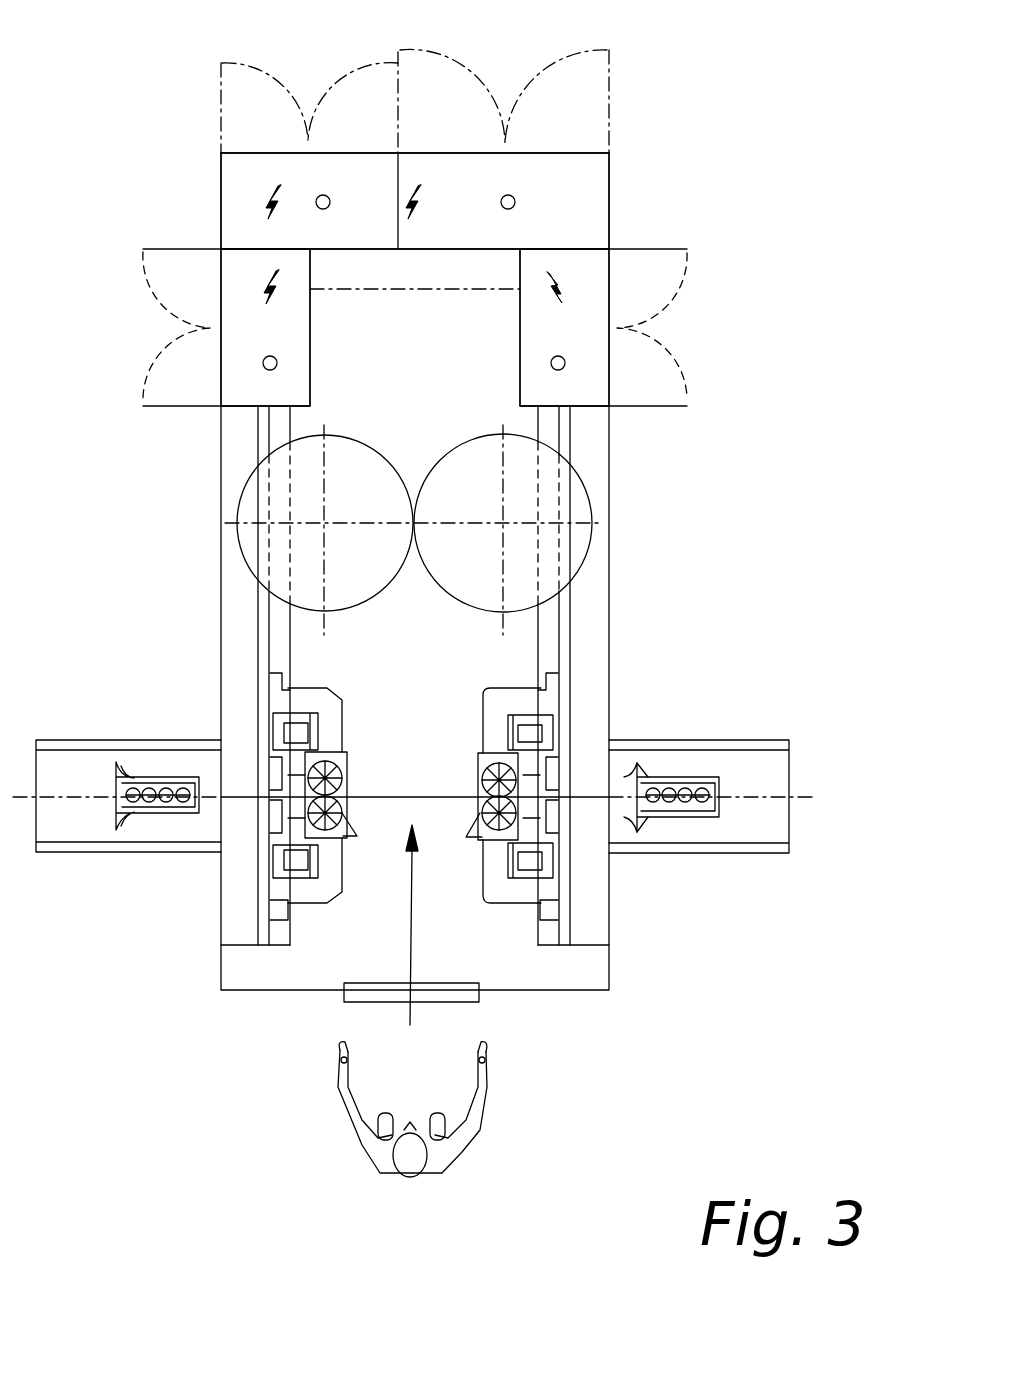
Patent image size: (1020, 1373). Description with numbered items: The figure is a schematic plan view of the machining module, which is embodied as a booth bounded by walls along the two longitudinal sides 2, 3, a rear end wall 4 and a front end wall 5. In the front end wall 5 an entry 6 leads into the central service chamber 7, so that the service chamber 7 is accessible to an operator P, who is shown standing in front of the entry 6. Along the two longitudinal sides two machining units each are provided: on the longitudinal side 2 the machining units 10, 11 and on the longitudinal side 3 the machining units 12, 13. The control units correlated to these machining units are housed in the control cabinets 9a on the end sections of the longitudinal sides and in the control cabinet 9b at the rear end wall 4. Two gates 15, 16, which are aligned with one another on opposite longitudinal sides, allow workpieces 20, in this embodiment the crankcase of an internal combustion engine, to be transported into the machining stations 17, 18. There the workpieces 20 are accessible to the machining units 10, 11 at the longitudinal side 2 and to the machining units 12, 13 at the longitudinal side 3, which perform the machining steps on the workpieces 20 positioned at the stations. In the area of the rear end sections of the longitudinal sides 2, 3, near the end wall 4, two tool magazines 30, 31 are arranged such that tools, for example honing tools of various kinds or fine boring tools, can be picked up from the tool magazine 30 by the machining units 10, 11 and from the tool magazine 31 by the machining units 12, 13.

The longitudinal side 2 is at (218, 467).
The longitudinal side 3 is at (610, 460).
The rear end wall 4 is at (475, 257).
The front end wall 5 is at (553, 992).
The entry 6 is at (370, 997).
The central service chamber 7 is at (413, 943).
The control cabinet 9a is at (235, 291).
The control cabinet 9b is at (592, 200).
The machining unit 10 is at (340, 842).
The machining unit 11 is at (347, 778).
The machining unit 12 is at (482, 778).
The machining unit 13 is at (492, 830).
The gate 15 is at (230, 899).
The gate 16 is at (603, 832).
The machining station 17 is at (327, 757).
The machining station 18 is at (500, 757).
The workpiece 20 is at (157, 782).
The tool magazine 30 is at (243, 543).
The tool magazine 31 is at (577, 542).
The operator P is at (363, 1148).